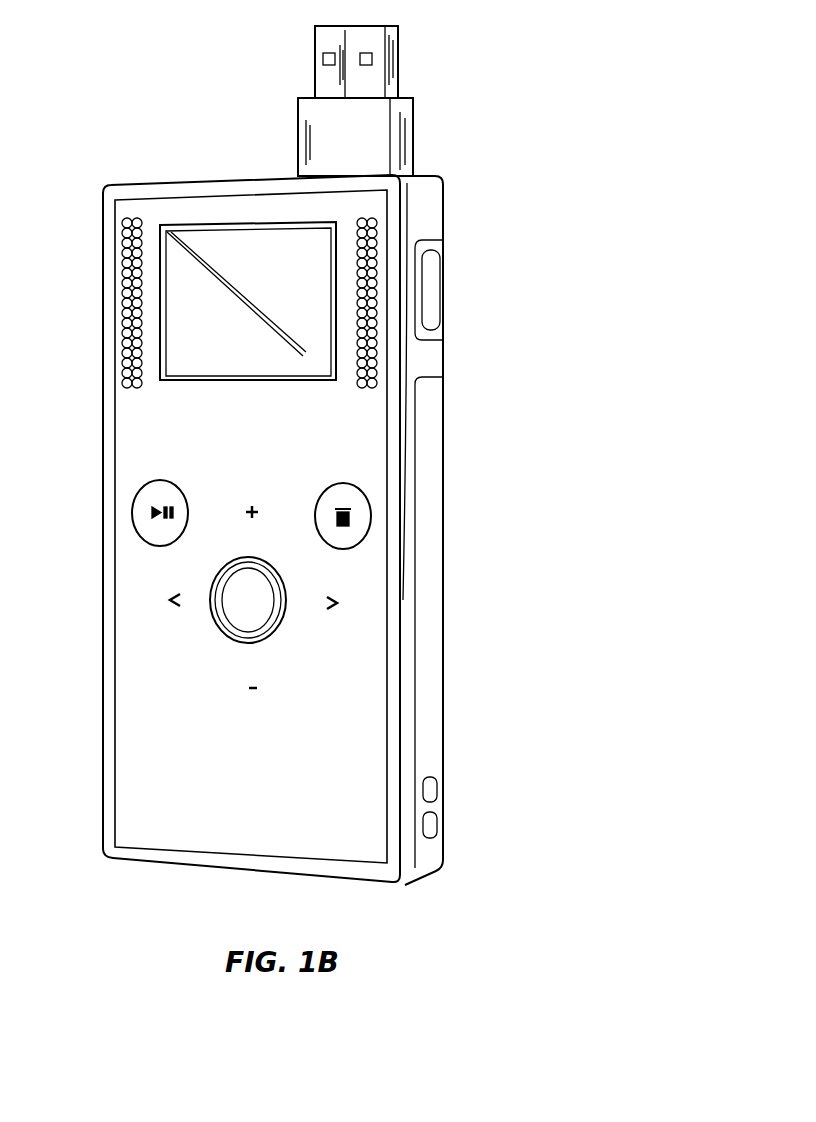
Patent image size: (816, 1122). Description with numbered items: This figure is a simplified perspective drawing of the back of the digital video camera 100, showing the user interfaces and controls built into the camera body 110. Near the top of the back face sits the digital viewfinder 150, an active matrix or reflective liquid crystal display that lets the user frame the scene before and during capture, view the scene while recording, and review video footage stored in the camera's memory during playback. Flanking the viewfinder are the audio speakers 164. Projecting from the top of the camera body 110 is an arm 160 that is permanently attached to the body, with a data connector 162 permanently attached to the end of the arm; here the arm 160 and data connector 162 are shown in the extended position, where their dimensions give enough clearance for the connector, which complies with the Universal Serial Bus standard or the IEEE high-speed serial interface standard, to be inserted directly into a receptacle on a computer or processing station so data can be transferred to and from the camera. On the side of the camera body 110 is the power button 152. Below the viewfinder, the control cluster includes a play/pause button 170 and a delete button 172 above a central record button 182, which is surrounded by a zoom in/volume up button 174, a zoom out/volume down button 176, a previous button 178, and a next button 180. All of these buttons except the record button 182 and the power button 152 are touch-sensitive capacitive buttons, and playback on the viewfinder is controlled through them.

The digital video camera 100 is at (145, 52).
The camera body 110 is at (432, 581).
The digital viewfinder 150 is at (230, 356).
The power button 152 is at (430, 296).
The arm 160 is at (413, 147).
The data connector 162 is at (398, 62).
The audio speakers 164 is at (127, 351).
The play/pause button 170 is at (160, 480).
The delete button 172 is at (343, 483).
The zoom in/volume up button 174 is at (250, 532).
The zoom out/volume down button 176 is at (253, 708).
The previous button 178 is at (163, 619).
The next button 180 is at (331, 628).
The record button 182 is at (243, 620).